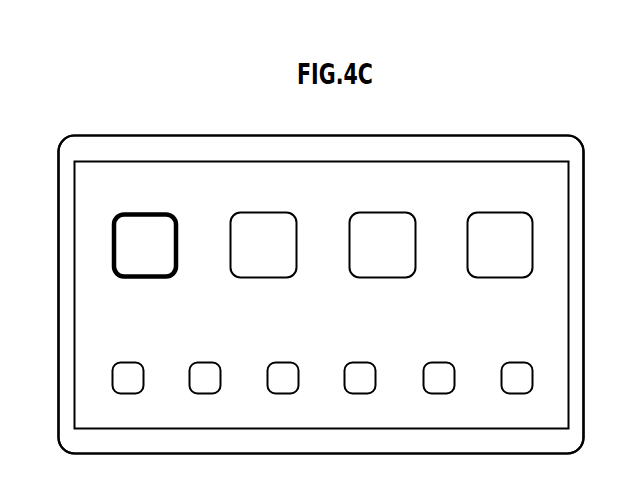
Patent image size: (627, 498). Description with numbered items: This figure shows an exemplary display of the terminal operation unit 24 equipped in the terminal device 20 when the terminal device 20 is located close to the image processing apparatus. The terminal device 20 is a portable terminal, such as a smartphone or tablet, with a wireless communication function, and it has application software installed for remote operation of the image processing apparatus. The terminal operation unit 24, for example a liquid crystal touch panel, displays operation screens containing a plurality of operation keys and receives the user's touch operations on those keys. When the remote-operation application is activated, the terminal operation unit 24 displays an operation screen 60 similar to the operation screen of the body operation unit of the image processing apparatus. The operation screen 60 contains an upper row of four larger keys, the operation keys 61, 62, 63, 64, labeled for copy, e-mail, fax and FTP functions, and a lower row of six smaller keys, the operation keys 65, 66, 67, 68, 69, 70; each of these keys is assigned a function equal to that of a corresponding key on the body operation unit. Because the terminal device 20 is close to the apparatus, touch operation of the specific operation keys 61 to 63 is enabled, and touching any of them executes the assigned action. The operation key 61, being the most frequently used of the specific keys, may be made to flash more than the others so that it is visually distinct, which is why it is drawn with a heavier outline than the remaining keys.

The terminal device 20 is at (62, 114).
The terminal operation unit 24 is at (112, 135).
The operation screen 60 is at (224, 178).
The operation key 61 is at (142, 212).
The operation key 62 is at (261, 212).
The operation key 63 is at (380, 212).
The operation key 64 is at (498, 212).
The operation key 65 is at (128, 362).
The operation key 66 is at (205, 362).
The operation key 67 is at (283, 362).
The operation key 68 is at (360, 362).
The operation key 69 is at (439, 362).
The operation key 70 is at (517, 362).